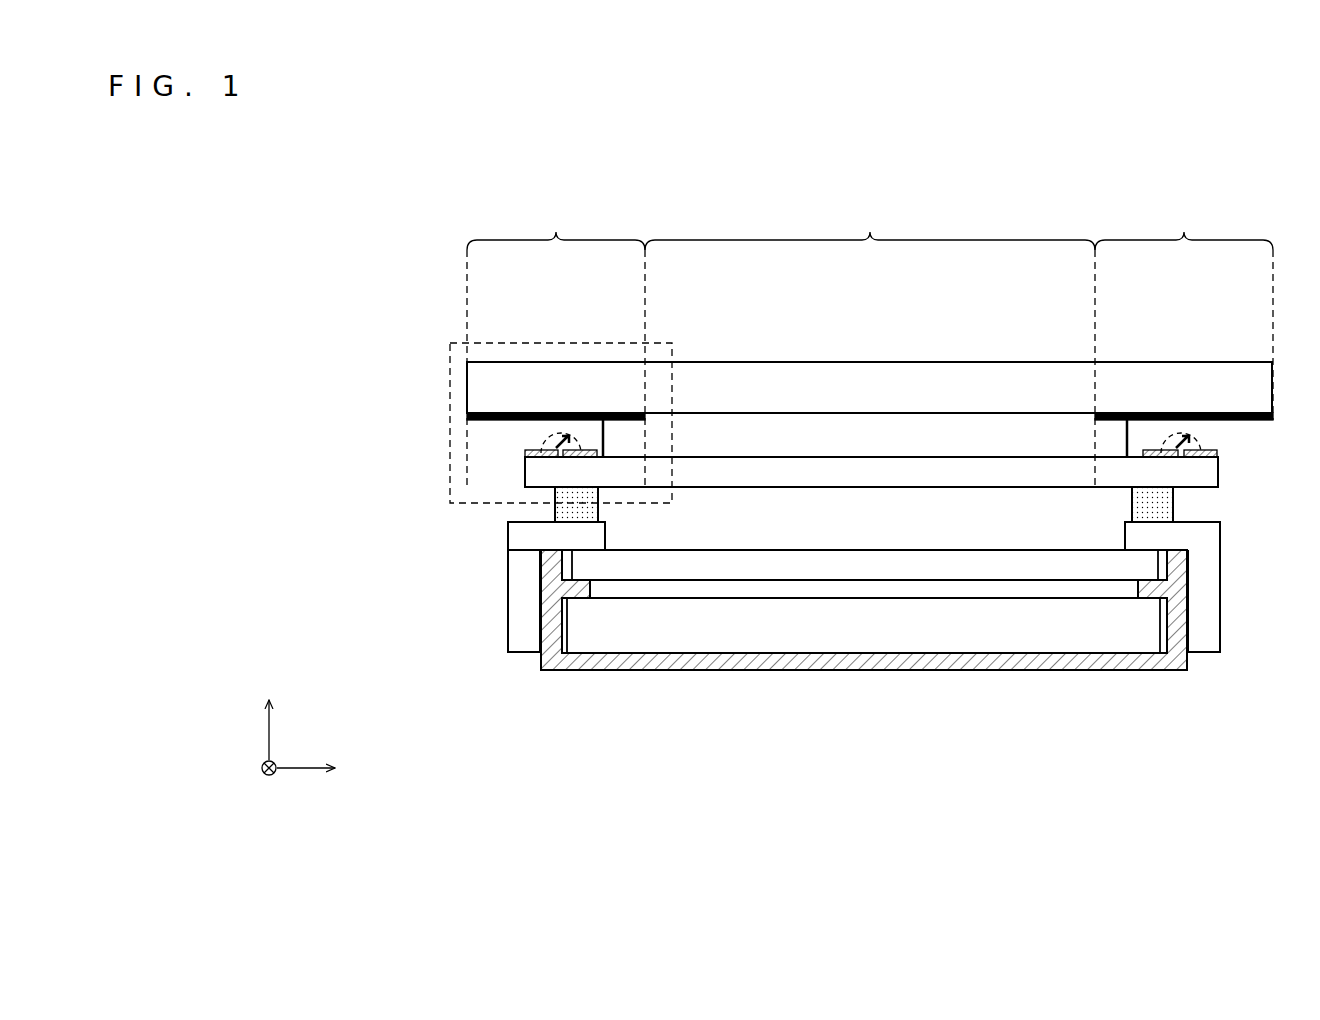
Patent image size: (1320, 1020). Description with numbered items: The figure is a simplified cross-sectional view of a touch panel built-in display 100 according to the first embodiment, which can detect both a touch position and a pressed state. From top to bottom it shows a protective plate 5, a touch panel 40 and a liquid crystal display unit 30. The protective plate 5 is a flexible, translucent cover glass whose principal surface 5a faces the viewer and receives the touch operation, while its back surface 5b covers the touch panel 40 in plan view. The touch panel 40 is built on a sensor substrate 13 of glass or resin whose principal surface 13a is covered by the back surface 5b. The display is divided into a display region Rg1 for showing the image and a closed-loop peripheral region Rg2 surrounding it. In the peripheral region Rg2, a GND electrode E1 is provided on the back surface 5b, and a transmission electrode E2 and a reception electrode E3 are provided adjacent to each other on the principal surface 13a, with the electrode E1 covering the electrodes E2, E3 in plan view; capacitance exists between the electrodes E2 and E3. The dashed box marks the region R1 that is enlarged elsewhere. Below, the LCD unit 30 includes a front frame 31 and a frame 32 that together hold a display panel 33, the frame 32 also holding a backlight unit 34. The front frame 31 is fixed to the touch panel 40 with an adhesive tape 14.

The touch panel built-in display 100 is at (1243, 168).
The protective plate 5 is at (488, 378).
The principal surface 5a is at (795, 361).
The back surface 5b is at (838, 412).
The sensor substrate 13 is at (525, 480).
The principal surface 13a is at (938, 456).
The adhesive tape 14 is at (556, 512).
The liquid crystal display unit 30 is at (545, 522).
The front frame 31 is at (525, 541).
The frame 32 is at (555, 662).
The display panel 33 is at (585, 566).
The backlight unit 34 is at (585, 615).
The touch panel 40 is at (498, 455).
The electrode E1 is at (467, 416).
The electrode E2 is at (534, 449).
The electrode E3 is at (586, 449).
The region R1 is at (455, 340).
The display region Rg1 is at (870, 344).
The peripheral region Rg2 is at (870, 346).